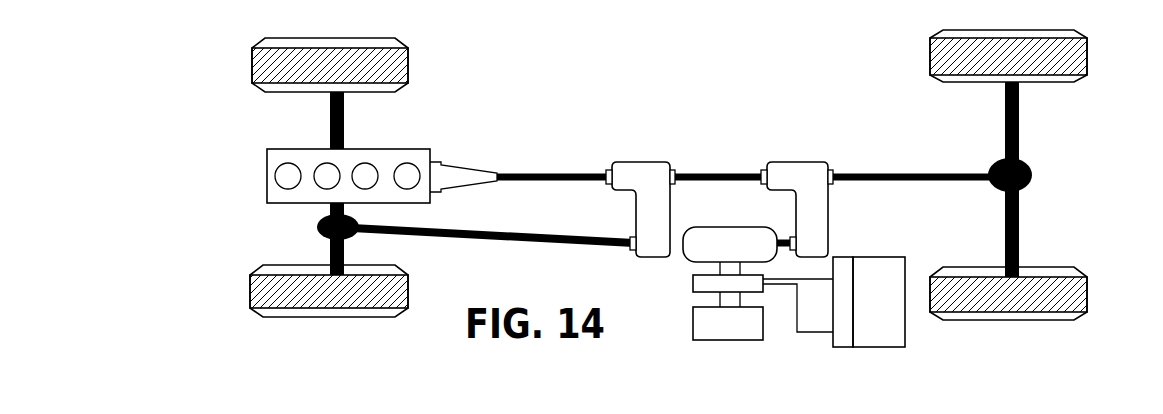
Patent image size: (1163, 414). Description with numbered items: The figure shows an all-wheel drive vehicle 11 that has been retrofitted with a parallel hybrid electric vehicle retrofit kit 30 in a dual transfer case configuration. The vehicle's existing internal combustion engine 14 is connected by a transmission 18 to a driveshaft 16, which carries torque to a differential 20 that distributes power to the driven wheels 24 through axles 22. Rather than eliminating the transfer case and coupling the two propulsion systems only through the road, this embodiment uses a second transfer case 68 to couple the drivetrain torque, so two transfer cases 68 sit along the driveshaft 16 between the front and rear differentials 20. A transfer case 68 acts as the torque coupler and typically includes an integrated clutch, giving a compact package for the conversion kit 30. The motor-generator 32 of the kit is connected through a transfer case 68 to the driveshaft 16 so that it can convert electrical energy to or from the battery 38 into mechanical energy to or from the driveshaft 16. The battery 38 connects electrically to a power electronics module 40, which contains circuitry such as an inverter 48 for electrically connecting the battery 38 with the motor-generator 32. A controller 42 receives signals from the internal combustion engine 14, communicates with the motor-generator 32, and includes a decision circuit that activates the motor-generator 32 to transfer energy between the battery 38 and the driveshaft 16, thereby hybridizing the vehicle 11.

The vehicle 11 is at (585, 128).
The internal combustion engine 14 is at (378, 150).
The driveshaft 16 is at (522, 172).
The transmission 18 is at (461, 163).
The differential 20 is at (318, 225).
The axle 22 is at (330, 128).
The driven wheel 24 is at (260, 84).
The hybrid electric vehicle retrofit kit 30 is at (667, 312).
The motor-generator 32 is at (707, 229).
The battery 38 is at (878, 260).
The power electronics module 40 is at (840, 260).
The controller 42 is at (780, 340).
The inverter 48 is at (693, 290).
The transfer case 68 is at (661, 170).